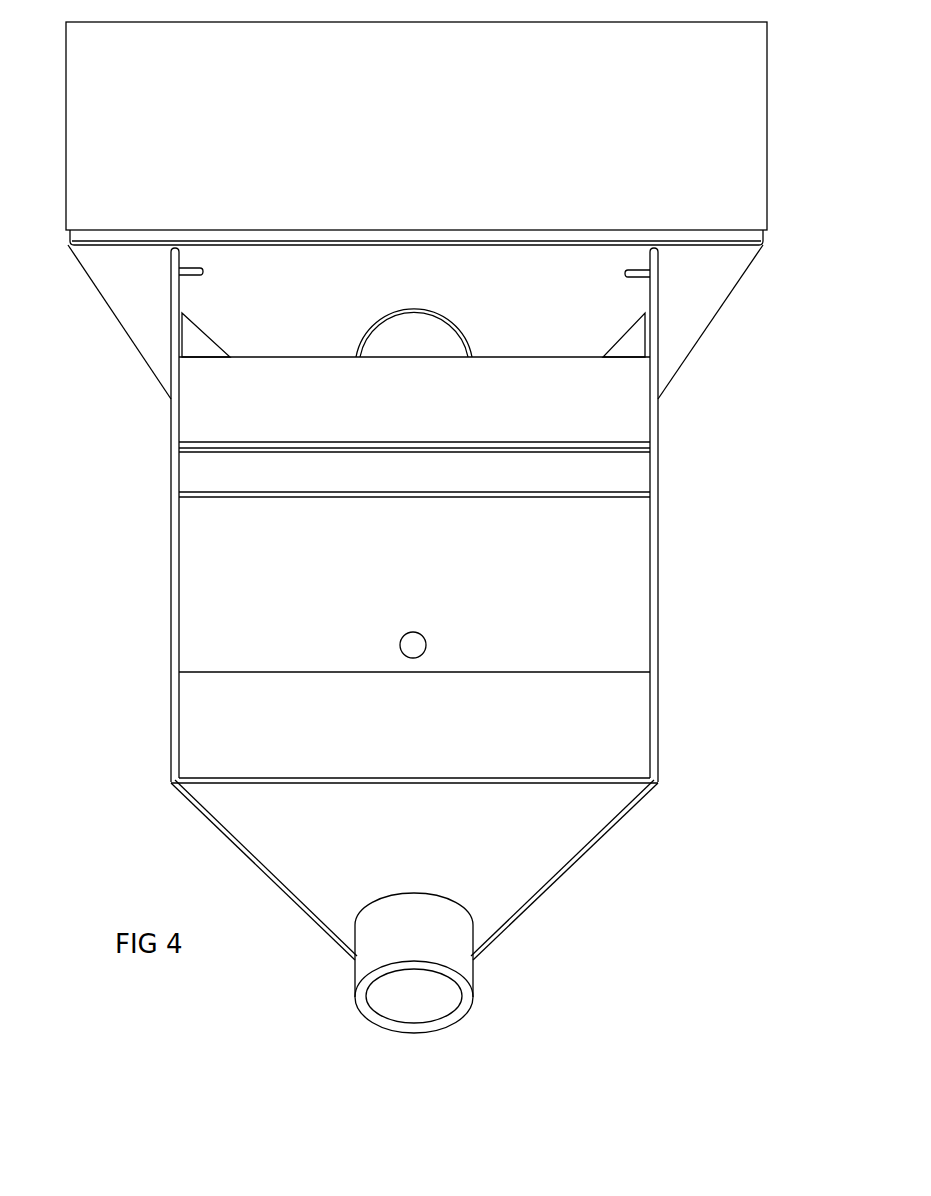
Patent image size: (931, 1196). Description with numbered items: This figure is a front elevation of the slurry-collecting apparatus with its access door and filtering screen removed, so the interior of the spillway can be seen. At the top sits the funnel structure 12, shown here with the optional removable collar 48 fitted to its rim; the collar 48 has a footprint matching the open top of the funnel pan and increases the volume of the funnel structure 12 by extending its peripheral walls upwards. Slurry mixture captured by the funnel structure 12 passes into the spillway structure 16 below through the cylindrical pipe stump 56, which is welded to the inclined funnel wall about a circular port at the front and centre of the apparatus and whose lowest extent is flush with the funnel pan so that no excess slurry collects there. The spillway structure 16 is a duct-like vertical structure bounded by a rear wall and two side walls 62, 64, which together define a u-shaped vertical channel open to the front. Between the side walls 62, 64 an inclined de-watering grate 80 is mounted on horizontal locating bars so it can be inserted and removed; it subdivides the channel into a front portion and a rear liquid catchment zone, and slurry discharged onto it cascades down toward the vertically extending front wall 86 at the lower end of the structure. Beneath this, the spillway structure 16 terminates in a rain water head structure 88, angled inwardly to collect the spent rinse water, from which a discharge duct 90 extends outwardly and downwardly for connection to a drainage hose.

The funnel structure 12 is at (88, 317).
The spillway structure 16 is at (693, 562).
The removable collar 48 is at (660, 95).
The cylindrical pipe stump 56 is at (457, 322).
The side wall 62 is at (657, 633).
The side wall 64 is at (171, 613).
The filtering grate 80 is at (440, 583).
The front wall 86 is at (422, 741).
The rain water head structure 88 is at (553, 848).
The discharge duct 90 is at (455, 967).